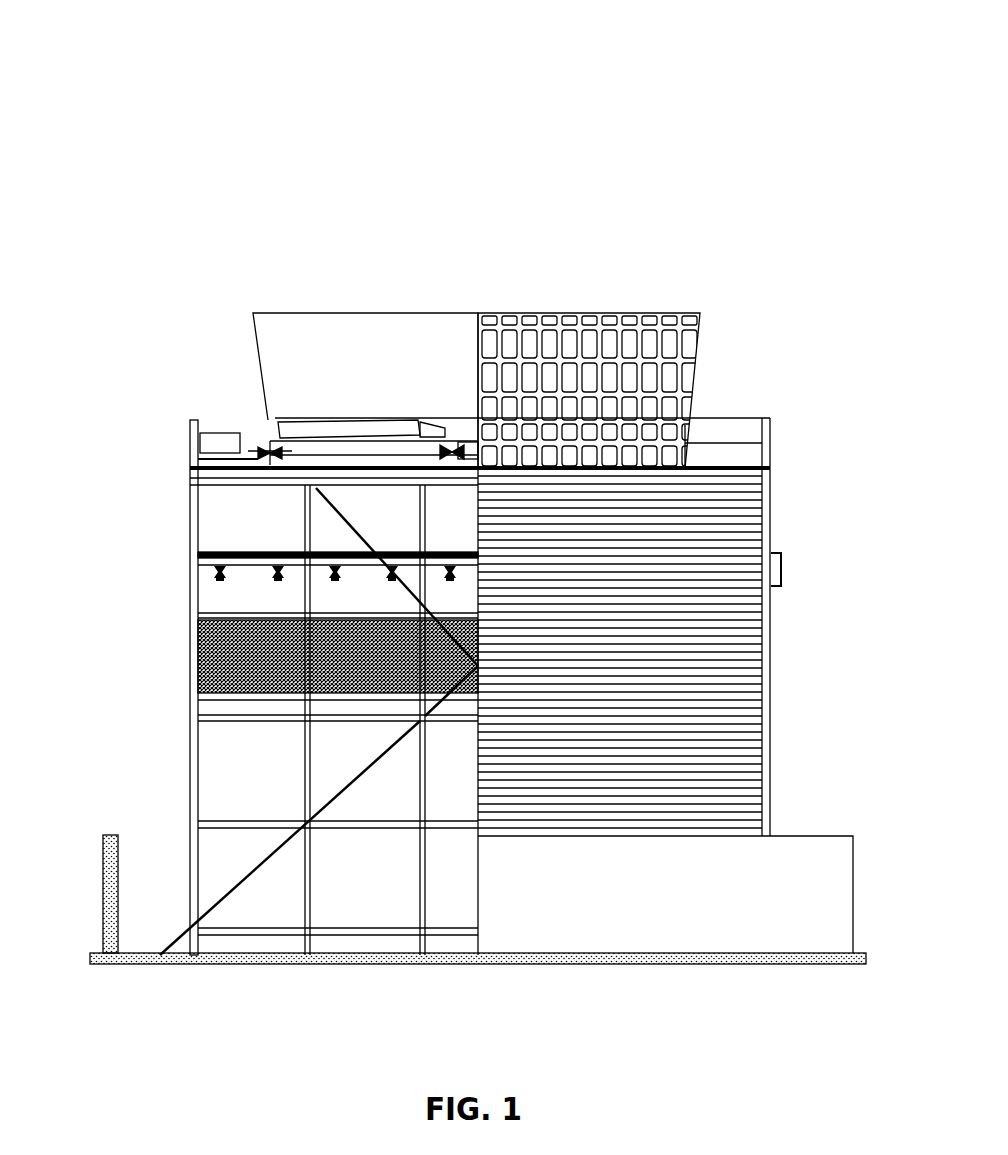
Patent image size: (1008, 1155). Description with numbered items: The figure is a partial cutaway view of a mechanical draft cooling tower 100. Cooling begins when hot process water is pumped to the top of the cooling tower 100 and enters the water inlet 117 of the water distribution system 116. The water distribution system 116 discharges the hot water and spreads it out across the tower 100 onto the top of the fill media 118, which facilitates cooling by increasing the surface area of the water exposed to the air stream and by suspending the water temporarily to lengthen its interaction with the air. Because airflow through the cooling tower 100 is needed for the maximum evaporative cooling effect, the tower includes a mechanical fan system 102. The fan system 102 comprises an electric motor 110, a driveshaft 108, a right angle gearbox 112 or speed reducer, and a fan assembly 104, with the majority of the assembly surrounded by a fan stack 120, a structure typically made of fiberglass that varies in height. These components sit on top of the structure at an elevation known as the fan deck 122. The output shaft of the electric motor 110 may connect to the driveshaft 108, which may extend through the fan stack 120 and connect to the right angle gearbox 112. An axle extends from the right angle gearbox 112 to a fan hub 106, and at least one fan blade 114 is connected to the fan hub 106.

The mechanical draft cooling tower 100 is at (238, 148).
The mechanical fan system 102 is at (243, 335).
The fan assembly 104 is at (405, 392).
The fan hub 106 is at (460, 420).
The driveshaft 108 is at (312, 448).
The electric motor 110 is at (218, 446).
The right angle gearbox 112 is at (478, 440).
The fan blade 114 is at (360, 425).
The water distribution system 116 is at (222, 560).
The water inlet 117 is at (783, 570).
The fill media 118 is at (205, 656).
The fan stack 120 is at (690, 353).
The fan deck 122 is at (770, 470).